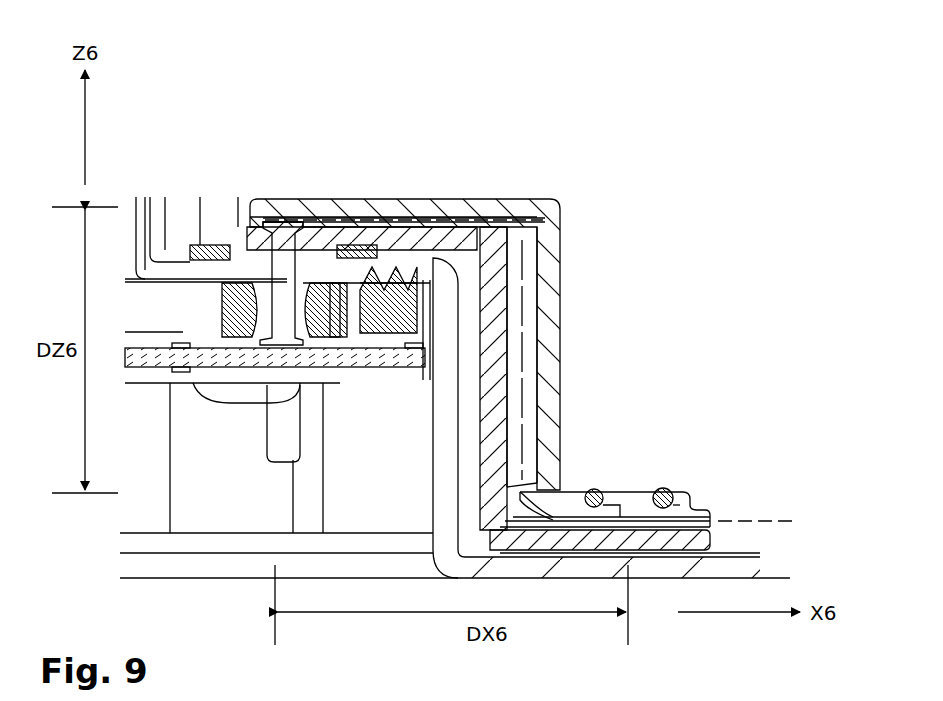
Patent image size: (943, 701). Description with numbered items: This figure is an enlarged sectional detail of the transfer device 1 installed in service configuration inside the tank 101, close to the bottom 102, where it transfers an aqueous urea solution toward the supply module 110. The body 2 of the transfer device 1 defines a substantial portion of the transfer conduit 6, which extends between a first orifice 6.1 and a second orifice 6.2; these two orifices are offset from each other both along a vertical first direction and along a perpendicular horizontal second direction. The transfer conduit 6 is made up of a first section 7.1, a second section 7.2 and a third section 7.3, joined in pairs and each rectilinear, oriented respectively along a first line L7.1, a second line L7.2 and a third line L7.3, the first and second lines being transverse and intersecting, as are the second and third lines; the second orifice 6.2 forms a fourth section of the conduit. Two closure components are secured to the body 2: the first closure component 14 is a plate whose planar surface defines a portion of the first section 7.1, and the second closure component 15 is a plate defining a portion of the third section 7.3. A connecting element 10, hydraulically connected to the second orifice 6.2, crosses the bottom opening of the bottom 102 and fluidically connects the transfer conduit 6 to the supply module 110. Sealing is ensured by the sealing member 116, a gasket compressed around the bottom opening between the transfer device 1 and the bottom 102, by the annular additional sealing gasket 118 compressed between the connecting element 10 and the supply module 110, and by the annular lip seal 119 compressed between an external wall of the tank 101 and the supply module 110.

The transfer device 1 is at (650, 392).
The body 2 is at (490, 453).
The transfer conduit 6 is at (656, 228).
The first orifice 6.1 is at (628, 506).
The second orifice 6.2 is at (280, 228).
The first section 7.1 is at (572, 515).
The second section 7.2 is at (524, 322).
The third section 7.3 is at (452, 219).
The connecting element 10 is at (285, 273).
The first closure component 14 is at (638, 541).
The second closure component 15 is at (440, 204).
The tank 101 is at (443, 425).
The bottom 102 is at (165, 266).
The supply module 110 is at (208, 390).
The sealing member 116 is at (152, 262).
The additional sealing gasket 118 is at (236, 325).
The lip seal 119 is at (382, 290).
The first line L7.1 is at (770, 520).
The second line L7.2 is at (530, 287).
The third line L7.3 is at (335, 219).